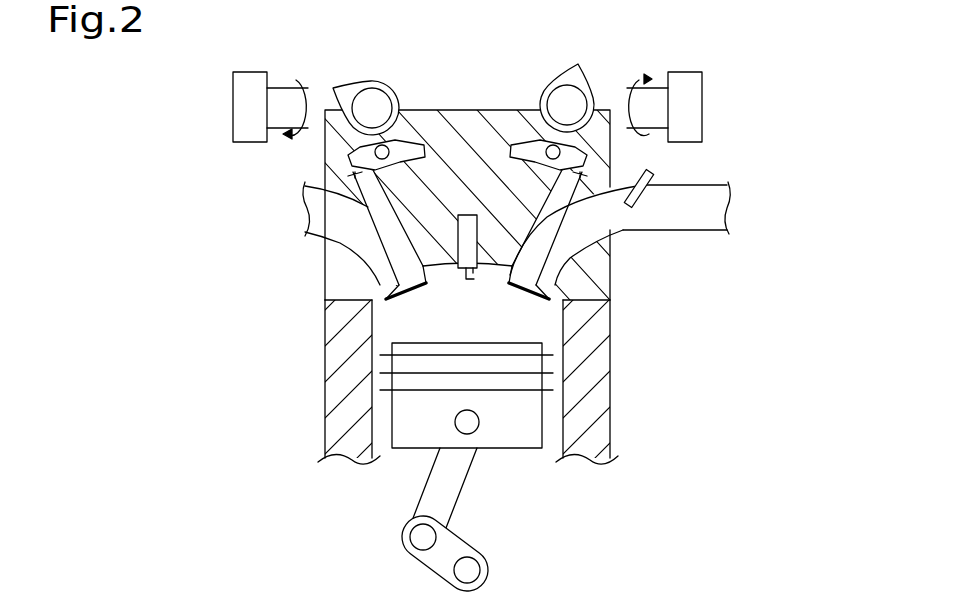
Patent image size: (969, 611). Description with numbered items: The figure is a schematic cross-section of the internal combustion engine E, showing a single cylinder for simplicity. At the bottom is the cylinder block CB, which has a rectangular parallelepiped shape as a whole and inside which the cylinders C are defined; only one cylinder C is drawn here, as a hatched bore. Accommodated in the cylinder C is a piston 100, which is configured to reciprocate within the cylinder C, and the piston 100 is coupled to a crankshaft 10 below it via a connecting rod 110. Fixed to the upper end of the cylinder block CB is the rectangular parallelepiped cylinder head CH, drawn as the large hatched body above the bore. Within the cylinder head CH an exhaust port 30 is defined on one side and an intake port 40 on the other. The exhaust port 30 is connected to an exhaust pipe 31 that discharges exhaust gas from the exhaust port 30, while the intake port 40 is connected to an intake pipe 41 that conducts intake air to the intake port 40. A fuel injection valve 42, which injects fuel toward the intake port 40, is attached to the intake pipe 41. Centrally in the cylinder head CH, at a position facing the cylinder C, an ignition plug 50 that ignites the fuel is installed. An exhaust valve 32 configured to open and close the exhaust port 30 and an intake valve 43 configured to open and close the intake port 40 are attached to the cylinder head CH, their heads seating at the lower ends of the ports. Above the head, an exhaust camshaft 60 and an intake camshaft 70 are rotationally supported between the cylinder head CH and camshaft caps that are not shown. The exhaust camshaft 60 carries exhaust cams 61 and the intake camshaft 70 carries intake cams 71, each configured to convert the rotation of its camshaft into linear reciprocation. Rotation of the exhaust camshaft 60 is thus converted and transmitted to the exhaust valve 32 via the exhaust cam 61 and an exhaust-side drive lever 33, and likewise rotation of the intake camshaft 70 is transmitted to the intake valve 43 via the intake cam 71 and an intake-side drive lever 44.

The internal combustion engine E is at (772, 55).
The cylinder head CH is at (603, 255).
The cylinder block CB is at (603, 375).
The cylinder C is at (550, 410).
The crankshaft 10 is at (473, 568).
The piston 100 is at (517, 444).
The connecting rod 110 is at (452, 505).
The exhaust port 30 is at (373, 257).
The exhaust pipe 31 is at (317, 233).
The exhaust valve 32 is at (363, 296).
The exhaust-side drive lever 33 is at (415, 143).
The intake port 40 is at (560, 257).
The intake pipe 41 is at (703, 225).
The fuel injection valve 42 is at (653, 172).
The intake valve 43 is at (570, 307).
The intake-side drive lever 44 is at (520, 138).
The ignition plug 50 is at (462, 274).
The exhaust camshaft 60 is at (316, 82).
The exhaust cam 61 is at (367, 97).
The intake camshaft 70 is at (609, 80).
The intake cam 71 is at (570, 70).